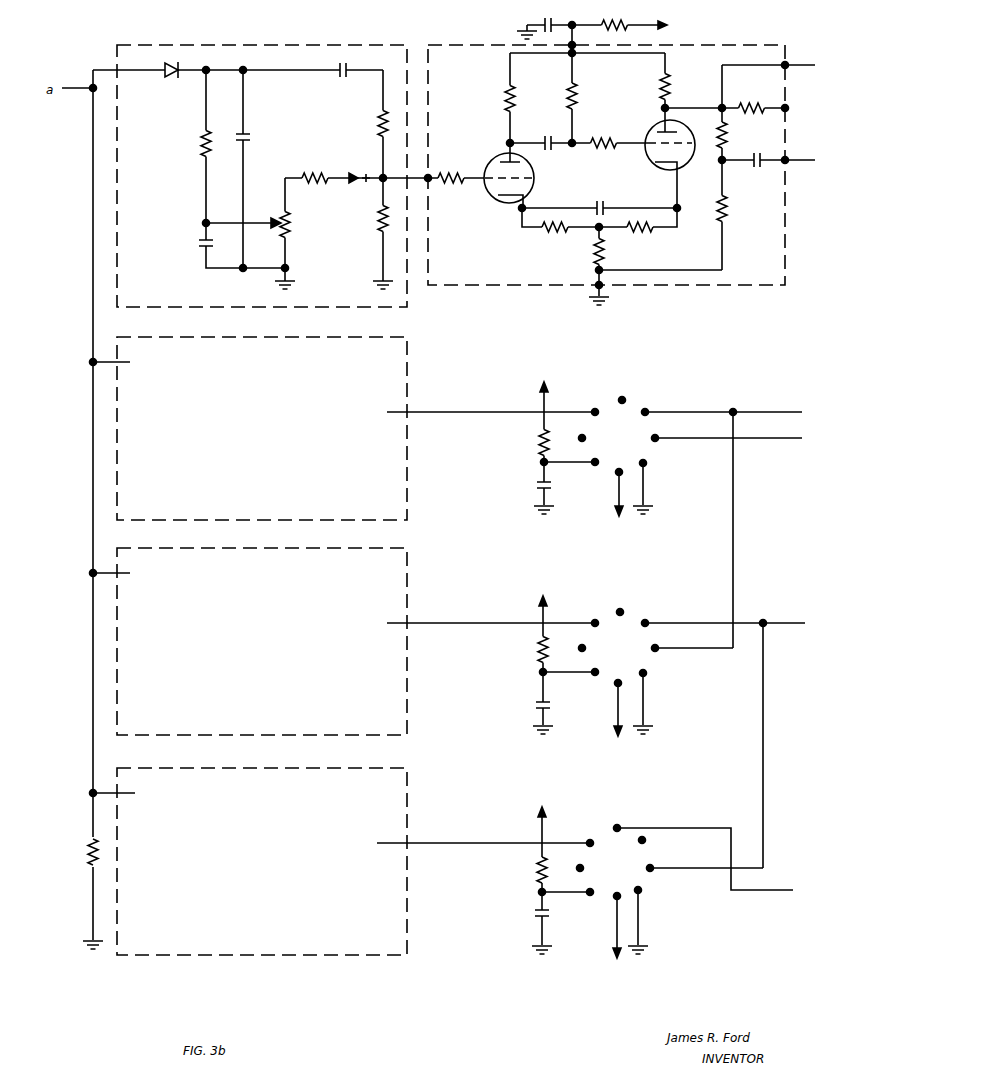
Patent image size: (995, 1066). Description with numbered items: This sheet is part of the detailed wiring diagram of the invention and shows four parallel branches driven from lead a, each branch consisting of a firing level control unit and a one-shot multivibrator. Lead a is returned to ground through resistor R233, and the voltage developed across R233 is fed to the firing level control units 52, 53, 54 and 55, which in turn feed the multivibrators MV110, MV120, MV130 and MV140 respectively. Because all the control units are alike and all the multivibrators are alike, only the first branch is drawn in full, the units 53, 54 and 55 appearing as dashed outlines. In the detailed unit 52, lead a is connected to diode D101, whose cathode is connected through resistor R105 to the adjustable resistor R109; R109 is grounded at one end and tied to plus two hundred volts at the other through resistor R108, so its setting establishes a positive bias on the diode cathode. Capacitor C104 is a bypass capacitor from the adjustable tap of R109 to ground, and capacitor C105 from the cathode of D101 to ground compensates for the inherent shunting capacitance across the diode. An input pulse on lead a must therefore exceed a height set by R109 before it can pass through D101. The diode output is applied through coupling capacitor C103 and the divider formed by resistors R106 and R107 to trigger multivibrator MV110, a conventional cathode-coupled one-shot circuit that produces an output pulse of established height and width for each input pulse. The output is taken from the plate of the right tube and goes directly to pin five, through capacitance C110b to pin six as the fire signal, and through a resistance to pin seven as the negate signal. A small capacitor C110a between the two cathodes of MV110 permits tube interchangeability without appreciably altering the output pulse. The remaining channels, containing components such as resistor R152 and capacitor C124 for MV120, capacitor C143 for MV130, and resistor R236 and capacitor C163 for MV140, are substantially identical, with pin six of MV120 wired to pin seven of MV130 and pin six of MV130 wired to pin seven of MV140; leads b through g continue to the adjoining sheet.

The firing level control unit 52 is at (288, 176).
The firing level control unit 53 is at (262, 428).
The firing level control unit 54 is at (262, 641).
The firing level control unit 55 is at (262, 861).
The multivibrator MV110 is at (618, 155).
The multivibrator MV120 is at (601, 508).
The multivibrator MV130 is at (601, 724).
The multivibrator MV140 is at (592, 883).
The diode D101 is at (176, 79).
The resistor R105 is at (188, 141).
The compensating capacitor C105 is at (261, 127).
The bypass capacitor C104 is at (190, 249).
The adjustable resistor R109 is at (299, 225).
The resistor R108 is at (335, 163).
The coupling capacitor C103 is at (345, 85).
The divider resistor R106 is at (364, 126).
The divider resistor R107 is at (366, 222).
The small capacitor C110a is at (589, 200).
The capacitance C110b is at (761, 175).
The resistor R152 is at (524, 443).
The capacitor C124 is at (560, 490).
The capacitor C143 is at (524, 703).
The resistor R236 is at (522, 870).
The capacitor C163 is at (522, 914).
The resistor R233 is at (77, 852).